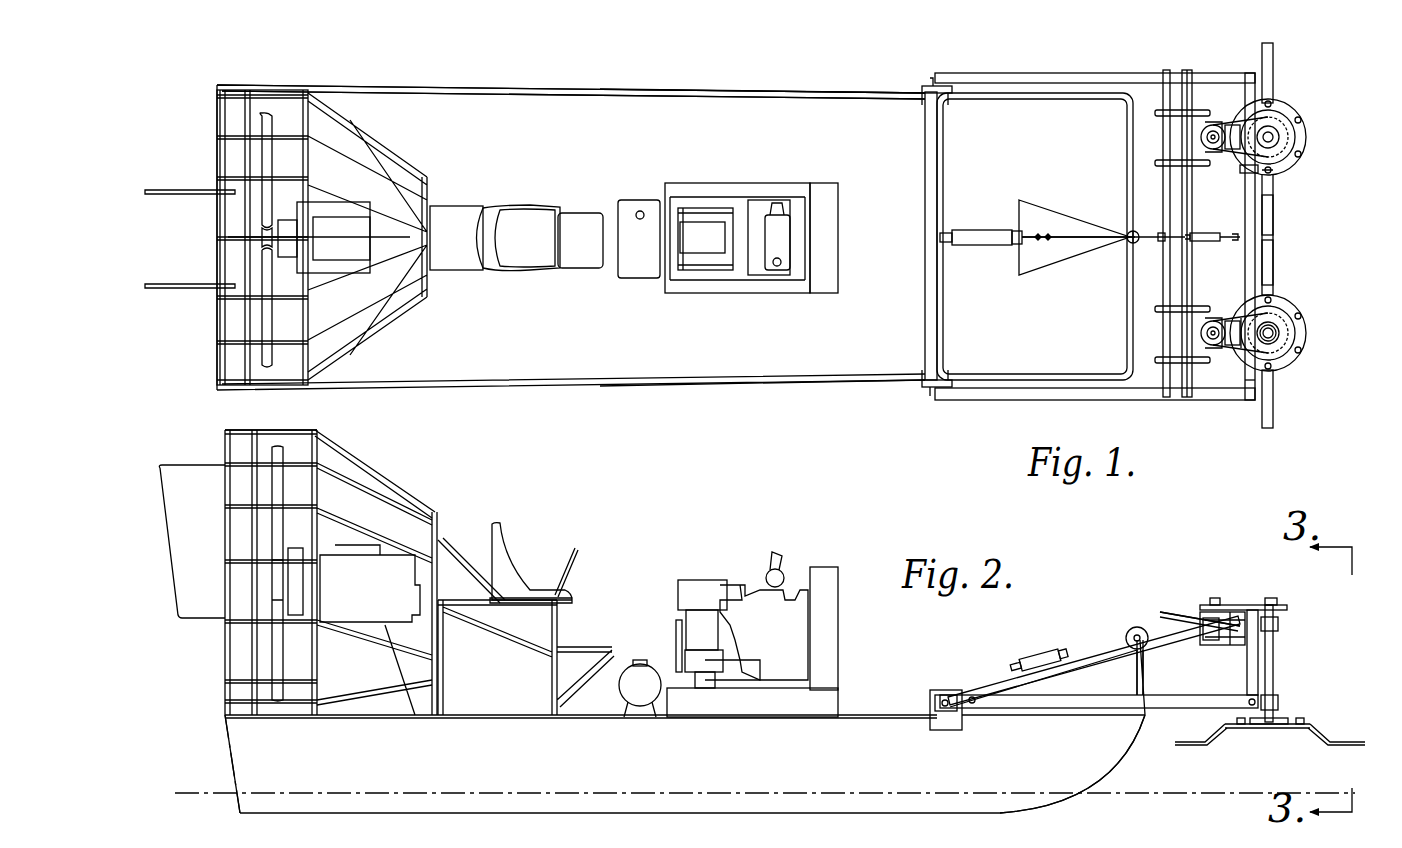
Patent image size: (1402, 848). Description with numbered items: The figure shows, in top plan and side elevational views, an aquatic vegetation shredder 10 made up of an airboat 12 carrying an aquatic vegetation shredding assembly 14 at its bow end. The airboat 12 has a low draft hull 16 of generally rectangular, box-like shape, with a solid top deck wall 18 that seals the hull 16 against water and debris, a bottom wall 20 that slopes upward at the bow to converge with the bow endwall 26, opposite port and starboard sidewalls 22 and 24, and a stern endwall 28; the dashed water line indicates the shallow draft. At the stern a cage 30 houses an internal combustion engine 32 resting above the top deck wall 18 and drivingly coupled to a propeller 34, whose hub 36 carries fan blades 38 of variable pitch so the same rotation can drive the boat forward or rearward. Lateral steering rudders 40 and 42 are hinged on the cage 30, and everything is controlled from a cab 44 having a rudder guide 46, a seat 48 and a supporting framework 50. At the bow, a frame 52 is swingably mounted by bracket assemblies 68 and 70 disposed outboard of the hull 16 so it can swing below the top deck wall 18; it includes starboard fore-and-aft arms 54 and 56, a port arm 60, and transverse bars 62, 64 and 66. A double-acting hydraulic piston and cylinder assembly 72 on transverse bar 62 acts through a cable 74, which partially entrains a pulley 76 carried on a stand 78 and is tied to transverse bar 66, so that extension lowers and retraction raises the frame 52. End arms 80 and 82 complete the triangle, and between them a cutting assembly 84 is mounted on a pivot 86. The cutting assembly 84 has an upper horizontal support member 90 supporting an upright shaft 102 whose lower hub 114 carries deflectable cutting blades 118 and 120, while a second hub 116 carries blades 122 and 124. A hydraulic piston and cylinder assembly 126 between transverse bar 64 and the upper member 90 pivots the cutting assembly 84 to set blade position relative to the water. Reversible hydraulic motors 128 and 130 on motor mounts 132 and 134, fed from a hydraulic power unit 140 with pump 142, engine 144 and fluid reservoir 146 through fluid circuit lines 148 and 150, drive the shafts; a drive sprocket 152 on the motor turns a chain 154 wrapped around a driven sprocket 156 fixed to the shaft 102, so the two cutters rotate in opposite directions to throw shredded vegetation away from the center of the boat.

In FIG. 1, the aquatic vegetation shredder 10 is at (550, 76).
In FIG. 1, the airboat 12 is at (445, 80).
In FIG. 2, the airboat 12 is at (765, 764).
In FIG. 1, the aquatic vegetation shredding assembly 14 is at (1082, 65).
In FIG. 1, the hull 16 is at (617, 108).
In FIG. 2, the hull 16 is at (1110, 770).
In FIG. 1, the top deck wall 18 is at (696, 108).
In FIG. 2, the top deck wall 18 is at (872, 708).
In FIG. 2, the bottom wall 20 is at (888, 812).
In FIG. 1, the port sidewall 22 is at (758, 93).
In FIG. 1, the starboard sidewall 24 is at (772, 381).
In FIG. 2, the starboard sidewall 24 is at (1030, 765).
In FIG. 2, the bow endwall 26 is at (1148, 724).
In FIG. 2, the stern endwall 28 is at (228, 733).
In FIG. 1, the cage 30 is at (232, 135).
In FIG. 2, the cage 30 is at (365, 473).
In FIG. 1, the internal combustion engine 32 is at (365, 210).
In FIG. 2, the internal combustion engine 32 is at (365, 560).
In FIG. 1, the propeller 34 is at (245, 155).
In FIG. 2, the propeller 34 is at (295, 450).
In FIG. 1, the hub 36 is at (265, 232).
In FIG. 2, the hub 36 is at (275, 578).
In FIG. 1, the fan blades 38 is at (266, 323).
In FIG. 2, the fan blades 38 is at (275, 649).
In FIG. 1, the steering rudder 40 is at (170, 195).
In FIG. 1, the steering rudder 42 is at (147, 283).
In FIG. 2, the steering rudder 42 is at (175, 525).
In FIG. 1, the cab 44 is at (488, 200).
In FIG. 2, the cab 44 is at (592, 570).
In FIG. 2, the rudder guide 46 is at (572, 548).
In FIG. 1, the seat 48 is at (523, 225).
In FIG. 2, the seat 48 is at (510, 540).
In FIG. 2, the supporting framework 50 is at (450, 545).
In FIG. 1, the frame 52 is at (1165, 268).
In FIG. 2, the frame 52 is at (1162, 602).
In FIG. 2, the starboard fore-and-aft arm 54 is at (972, 690).
In FIG. 1, the starboard fore-and-aft arm 56 is at (982, 402).
In FIG. 2, the starboard fore-and-aft arm 56 is at (1010, 682).
In FIG. 1, the port fore-and-aft arm 60 is at (1012, 77).
In FIG. 1, the transverse bar 62 is at (930, 296).
In FIG. 1, the transverse bar 64 is at (1168, 90).
In FIG. 1, the transverse bar 66 is at (1186, 88).
In FIG. 1, the bracket assembly 68 is at (930, 388).
In FIG. 2, the bracket assembly 68 is at (945, 727).
In FIG. 1, the bracket assembly 70 is at (930, 88).
In FIG. 1, the double-acting hydraulic piston and cylinder assembly 72 is at (1005, 220).
In FIG. 2, the double-acting hydraulic piston and cylinder assembly 72 is at (1035, 650).
In FIG. 1, the cable 74 is at (1080, 237).
In FIG. 2, the cable 74 is at (1100, 640).
In FIG. 1, the pulley 76 is at (1130, 232).
In FIG. 2, the pulley 76 is at (1130, 628).
In FIG. 1, the stand 78 is at (1060, 215).
In FIG. 2, the stand 78 is at (1105, 688).
In FIG. 1, the end arm 80 is at (1250, 398).
In FIG. 2, the end arm 80 is at (1258, 660).
In FIG. 1, the end arm 82 is at (1250, 73).
In FIG. 1, the cutting assembly 84 is at (1308, 241).
In FIG. 2, the pivot 86 is at (1275, 700).
In FIG. 1, the upper horizontal support member 90 is at (1255, 173).
In FIG. 2, the upright shaft 102 is at (1275, 637).
In FIG. 1, the hub 114 is at (1295, 315).
In FIG. 2, the hub 114 is at (1270, 728).
In FIG. 1, the hub 116 is at (1295, 120).
In FIG. 1, the cutting blade 118 is at (1273, 422).
In FIG. 2, the cutting blade 118 is at (1190, 746).
In FIG. 1, the cutting blade 120 is at (1273, 265).
In FIG. 2, the cutting blade 120 is at (1333, 746).
In FIG. 1, the cutting blade 122 is at (1273, 215).
In FIG. 1, the cutting blade 124 is at (1273, 65).
In FIG. 1, the hydraulic piston and cylinder assembly 126 is at (1200, 232).
In FIG. 1, the hydraulic motor 128 is at (1230, 320).
In FIG. 2, the hydraulic motor 128 is at (1216, 645).
In FIG. 1, the hydraulic motor 130 is at (1232, 125).
In FIG. 1, the motor mount 132 is at (1240, 348).
In FIG. 2, the motor mount 132 is at (1238, 612).
In FIG. 1, the motor mount 134 is at (1240, 150).
In FIG. 1, the hydraulic power unit 140 is at (848, 222).
In FIG. 2, the hydraulic power unit 140 is at (752, 570).
In FIG. 1, the pump 142 is at (700, 228).
In FIG. 2, the pump 142 is at (690, 585).
In FIG. 1, the engine 144 is at (760, 205).
In FIG. 2, the engine 144 is at (785, 595).
In FIG. 1, the fluid reservoir 146 is at (632, 205).
In FIG. 2, the fluid reservoir 146 is at (633, 672).
In FIG. 1, the fluid circuit line 148 is at (1205, 360).
In FIG. 2, the fluid circuit line 148 is at (1170, 600).
In FIG. 1, the fluid circuit line 150 is at (1205, 306).
In FIG. 1, the drive sprocket 152 is at (1205, 332).
In FIG. 2, the drive sprocket 152 is at (1214, 598).
In FIG. 1, the chain 154 is at (1285, 345).
In FIG. 2, the chain 154 is at (1262, 605).
In FIG. 1, the driven sprocket 156 is at (1280, 333).
In FIG. 2, the driven sprocket 156 is at (1280, 600).